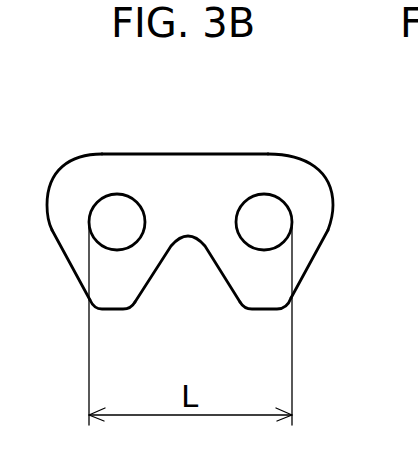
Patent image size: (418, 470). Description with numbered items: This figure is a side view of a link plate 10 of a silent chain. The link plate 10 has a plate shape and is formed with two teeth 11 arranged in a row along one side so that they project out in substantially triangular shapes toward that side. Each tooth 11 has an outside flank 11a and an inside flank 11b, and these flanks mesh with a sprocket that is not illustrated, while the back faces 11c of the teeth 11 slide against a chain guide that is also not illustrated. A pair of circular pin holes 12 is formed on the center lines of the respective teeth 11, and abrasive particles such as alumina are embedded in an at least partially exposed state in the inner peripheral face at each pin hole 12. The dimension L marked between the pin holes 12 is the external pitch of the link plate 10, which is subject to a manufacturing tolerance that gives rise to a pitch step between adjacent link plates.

The link plate 10 is at (218, 175).
The tooth 11 is at (270, 295).
The outside flank 11a is at (302, 272).
The inside flank 11b is at (153, 276).
The back face 11c is at (168, 153).
The pin hole 12 is at (112, 212).